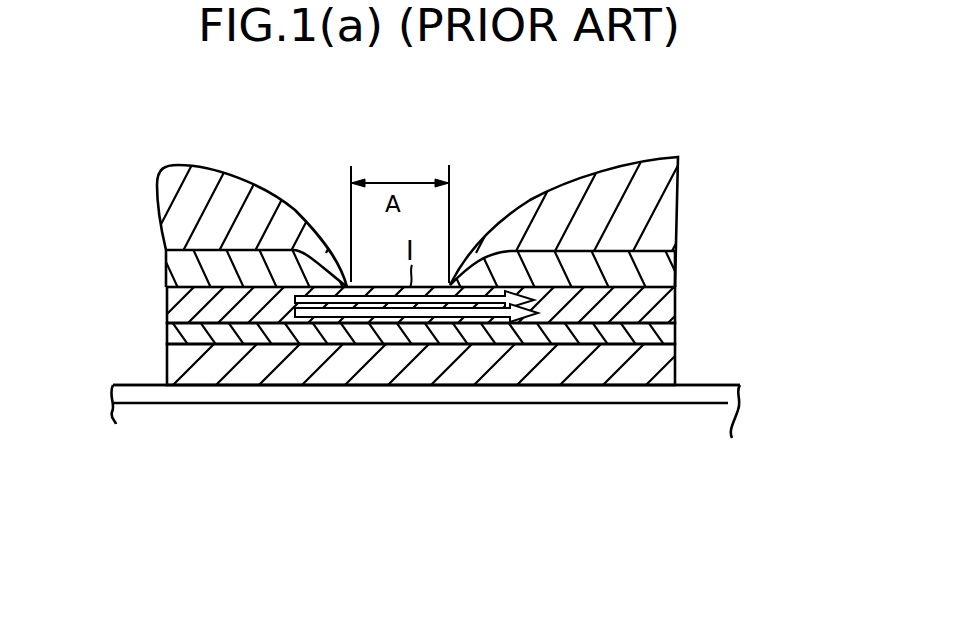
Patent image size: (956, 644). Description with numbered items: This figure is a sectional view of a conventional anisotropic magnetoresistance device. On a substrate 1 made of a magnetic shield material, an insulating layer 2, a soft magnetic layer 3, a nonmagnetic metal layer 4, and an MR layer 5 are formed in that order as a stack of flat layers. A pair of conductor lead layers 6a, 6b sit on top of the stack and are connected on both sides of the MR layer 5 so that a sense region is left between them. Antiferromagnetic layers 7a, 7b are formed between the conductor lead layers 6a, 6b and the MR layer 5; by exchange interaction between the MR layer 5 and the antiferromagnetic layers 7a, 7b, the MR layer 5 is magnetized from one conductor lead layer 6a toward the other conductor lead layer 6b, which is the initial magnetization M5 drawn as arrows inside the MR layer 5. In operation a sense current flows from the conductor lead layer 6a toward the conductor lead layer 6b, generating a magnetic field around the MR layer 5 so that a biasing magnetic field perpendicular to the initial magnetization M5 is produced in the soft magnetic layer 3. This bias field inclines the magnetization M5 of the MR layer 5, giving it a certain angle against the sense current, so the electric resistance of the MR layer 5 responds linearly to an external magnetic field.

The substrate 1 is at (722, 414).
The insulating layer 2 is at (585, 397).
The soft magnetic layer 3 is at (662, 372).
The nonmagnetic metal layer 4 is at (657, 338).
The MR layer 5 is at (652, 310).
The conductor lead layer 6a is at (182, 200).
The conductor lead layer 6b is at (665, 223).
The antiferromagnetic layer 7a is at (185, 265).
The antiferromagnetic layer 7b is at (653, 273).
The magnetization of the MR layer M5 is at (327, 323).